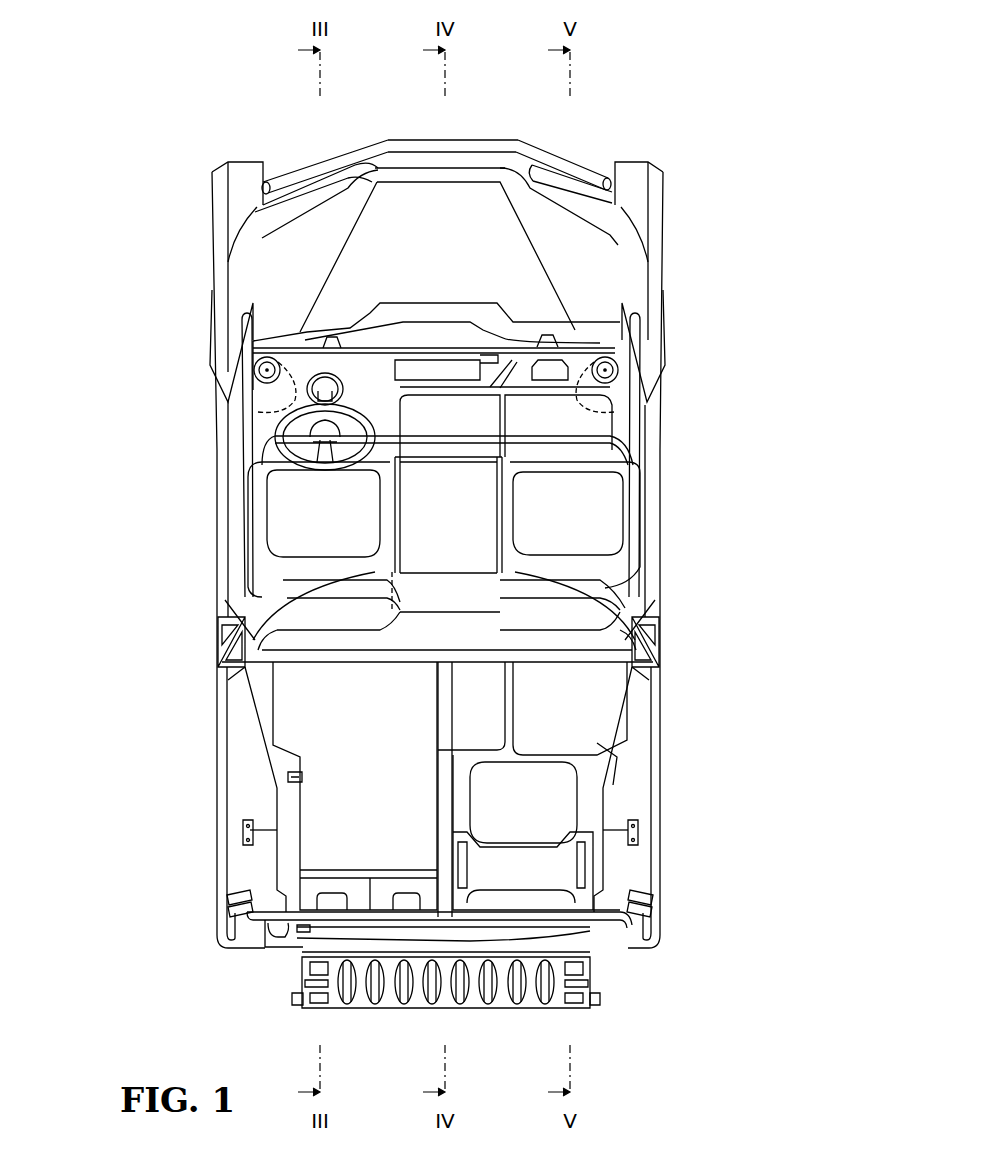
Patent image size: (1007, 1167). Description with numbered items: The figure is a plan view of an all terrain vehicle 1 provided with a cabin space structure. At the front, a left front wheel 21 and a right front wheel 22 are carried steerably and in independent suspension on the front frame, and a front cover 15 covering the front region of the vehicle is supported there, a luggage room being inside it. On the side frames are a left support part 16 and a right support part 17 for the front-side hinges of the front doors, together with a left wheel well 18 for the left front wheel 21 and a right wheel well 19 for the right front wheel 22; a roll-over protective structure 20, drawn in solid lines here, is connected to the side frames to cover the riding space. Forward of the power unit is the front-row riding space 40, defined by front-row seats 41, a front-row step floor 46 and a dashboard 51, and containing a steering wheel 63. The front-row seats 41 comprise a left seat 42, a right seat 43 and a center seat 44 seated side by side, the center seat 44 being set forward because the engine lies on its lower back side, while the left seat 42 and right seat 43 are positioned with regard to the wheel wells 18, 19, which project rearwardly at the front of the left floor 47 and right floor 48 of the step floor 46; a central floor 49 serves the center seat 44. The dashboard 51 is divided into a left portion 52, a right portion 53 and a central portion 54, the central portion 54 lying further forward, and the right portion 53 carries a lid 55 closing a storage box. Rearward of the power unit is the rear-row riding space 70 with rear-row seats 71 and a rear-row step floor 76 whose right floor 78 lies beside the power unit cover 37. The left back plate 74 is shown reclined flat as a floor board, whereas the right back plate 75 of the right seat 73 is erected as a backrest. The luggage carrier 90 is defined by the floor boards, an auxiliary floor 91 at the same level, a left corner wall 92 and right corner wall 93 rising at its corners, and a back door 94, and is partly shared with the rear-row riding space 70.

The all terrain vehicle 1 is at (641, 105).
The front cover 15 is at (598, 268).
The left support part 16 is at (213, 367).
The right support part 17 is at (661, 352).
The left wheel well 18 is at (258, 402).
The right wheel well 19 is at (600, 405).
The roll-over protective structure 20 is at (676, 618).
The left front wheel 21 is at (213, 190).
The right front wheel 22 is at (662, 184).
The power unit cover 37 is at (471, 789).
The front-row riding space 40 is at (590, 551).
The front-row seats 41 is at (484, 553).
The left seat 42 is at (323, 513).
The right seat 43 is at (568, 513).
The center seat 44 is at (448, 515).
The front-row step floor 46 is at (386, 421).
The left floor 47 is at (312, 433).
The right floor 48 is at (558, 426).
The central floor 49 is at (450, 426).
The dashboard 51 is at (436, 234).
The left portion 52 is at (363, 335).
The right portion 53 is at (527, 363).
The central portion 54 is at (413, 353).
The lid 55 is at (548, 392).
The steering wheel 63 is at (247, 455).
The rear-row riding space 70 is at (628, 768).
The rear-row seats 71 is at (536, 832).
The right seat 73 is at (523, 802).
The left back plate 74 is at (355, 786).
The right back plate 75 is at (536, 832).
The rear-row step floor 76 is at (570, 708).
The right floor 78 is at (570, 708).
The luggage carrier 90 is at (626, 953).
The auxiliary floor 91 is at (387, 890).
The left corner wall 92 is at (250, 883).
The right corner wall 93 is at (628, 885).
The back door 94 is at (448, 994).